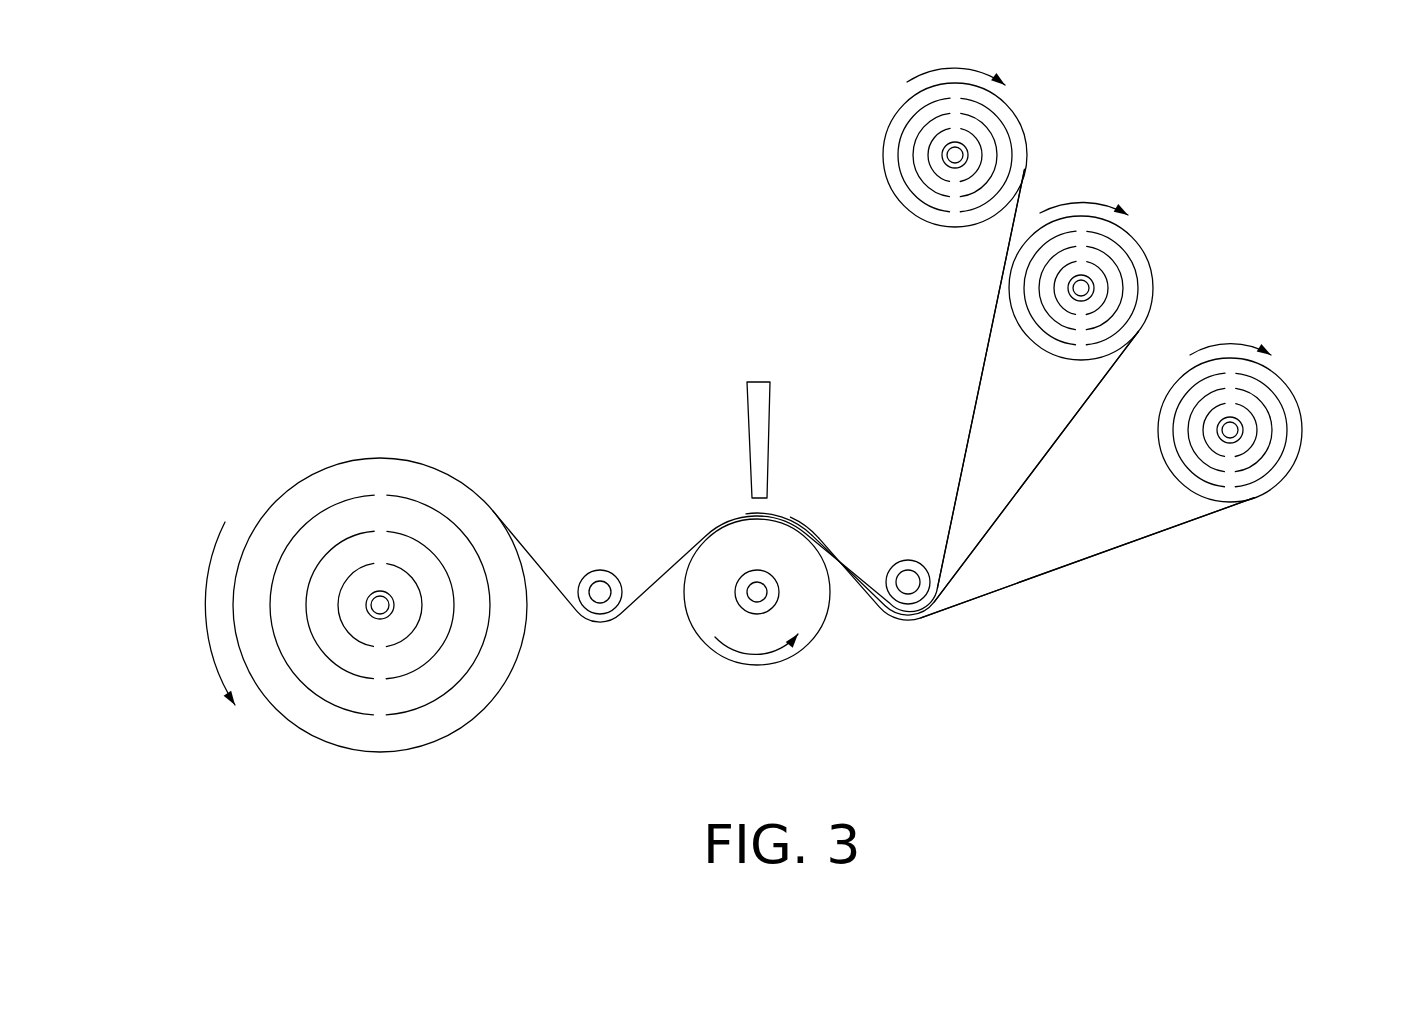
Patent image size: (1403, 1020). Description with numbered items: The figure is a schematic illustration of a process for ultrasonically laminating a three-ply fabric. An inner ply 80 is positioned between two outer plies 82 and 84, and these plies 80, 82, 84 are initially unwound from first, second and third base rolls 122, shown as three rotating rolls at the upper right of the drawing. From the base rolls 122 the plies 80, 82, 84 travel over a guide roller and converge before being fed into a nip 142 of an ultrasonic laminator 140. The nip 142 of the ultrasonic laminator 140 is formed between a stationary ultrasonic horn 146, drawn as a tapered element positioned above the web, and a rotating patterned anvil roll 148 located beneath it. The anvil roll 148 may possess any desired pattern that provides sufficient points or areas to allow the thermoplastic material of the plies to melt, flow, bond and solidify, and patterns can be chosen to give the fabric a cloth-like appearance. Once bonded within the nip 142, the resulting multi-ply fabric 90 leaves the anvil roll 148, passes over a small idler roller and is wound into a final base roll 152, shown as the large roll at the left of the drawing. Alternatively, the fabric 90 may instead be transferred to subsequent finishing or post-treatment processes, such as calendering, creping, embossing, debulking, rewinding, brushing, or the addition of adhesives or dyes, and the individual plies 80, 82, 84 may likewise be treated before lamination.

The final base roll 152 is at (316, 473).
The multi-ply fabric 90 is at (675, 564).
The rotating patterned anvil roll 148 is at (814, 638).
The nip 142 is at (740, 501).
The stationary ultrasonic horn 146 is at (747, 400).
The ultrasonic laminator 140 is at (705, 695).
The outer ply 82 is at (989, 340).
The inner ply 80 is at (1109, 372).
The outer ply 84 is at (1177, 525).
The base rolls 122 is at (1020, 124).